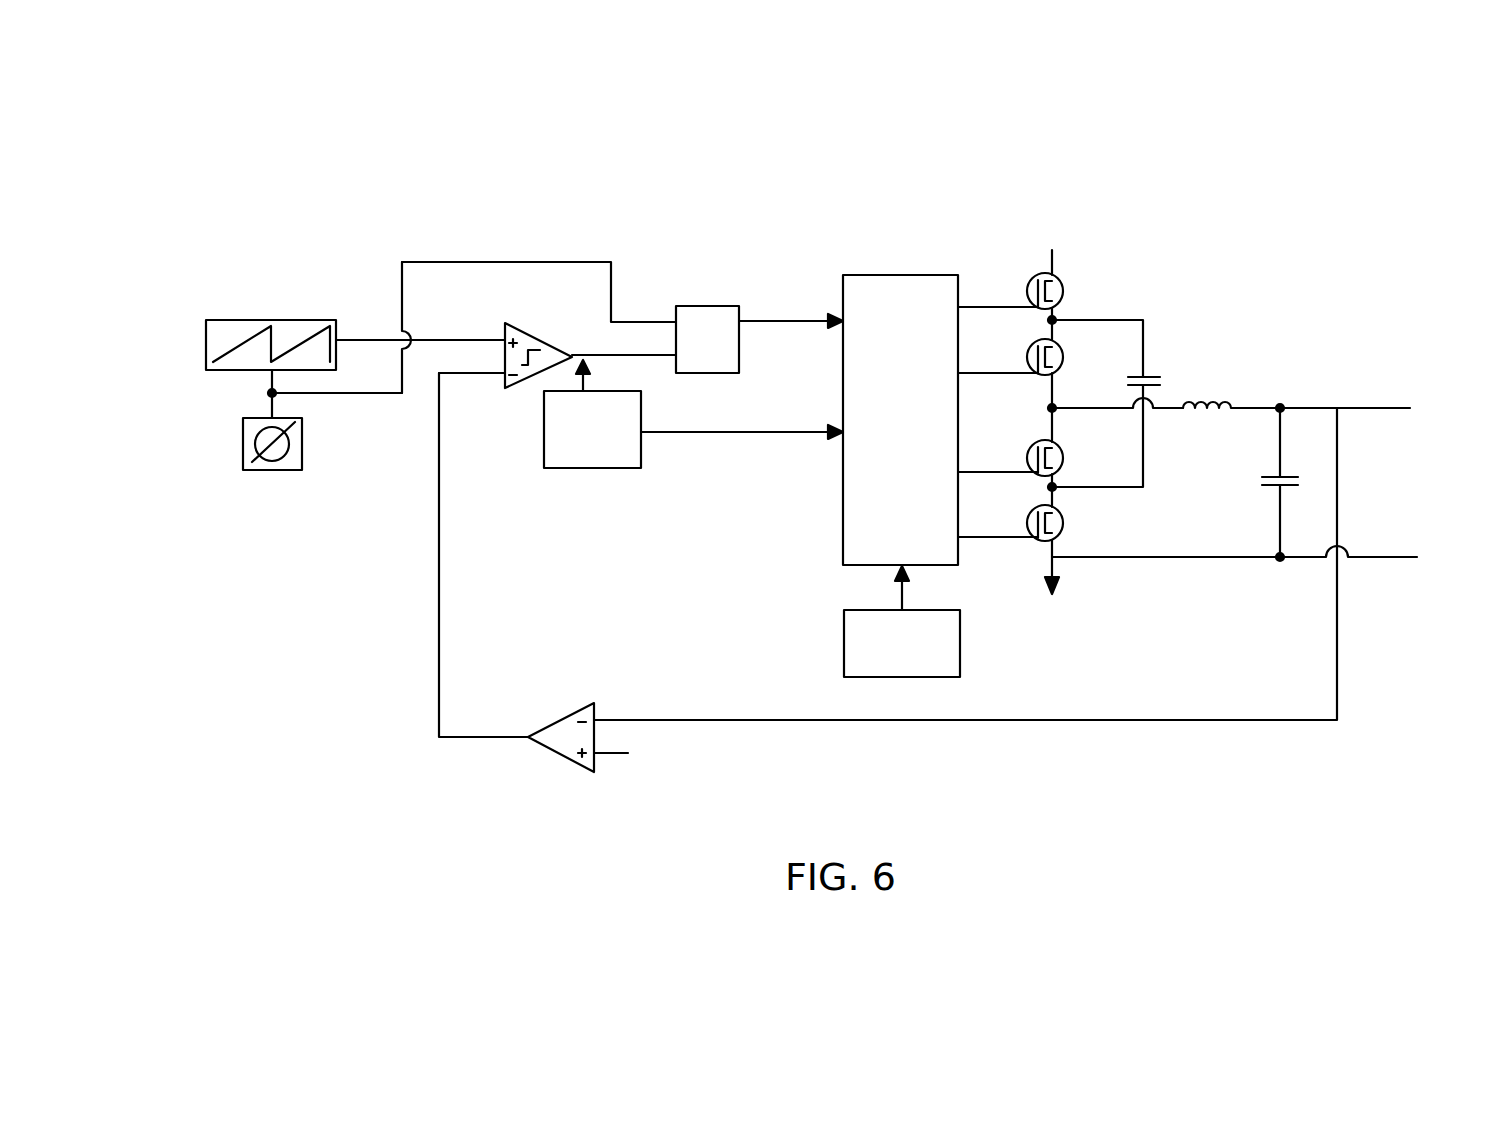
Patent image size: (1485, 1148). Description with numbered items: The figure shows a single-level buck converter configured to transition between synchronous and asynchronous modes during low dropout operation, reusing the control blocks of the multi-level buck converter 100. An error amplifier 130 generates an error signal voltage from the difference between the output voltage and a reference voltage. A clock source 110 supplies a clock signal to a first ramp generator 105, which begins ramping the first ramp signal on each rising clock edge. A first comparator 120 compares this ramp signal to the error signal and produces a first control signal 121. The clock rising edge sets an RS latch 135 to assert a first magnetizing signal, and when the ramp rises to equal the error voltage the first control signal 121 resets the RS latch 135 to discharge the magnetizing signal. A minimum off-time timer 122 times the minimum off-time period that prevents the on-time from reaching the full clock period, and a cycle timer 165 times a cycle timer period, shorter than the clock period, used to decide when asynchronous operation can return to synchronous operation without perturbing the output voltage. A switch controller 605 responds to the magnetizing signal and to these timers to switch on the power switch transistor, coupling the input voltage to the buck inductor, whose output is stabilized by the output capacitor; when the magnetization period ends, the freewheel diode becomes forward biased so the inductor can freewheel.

The multi-level buck converter 100 is at (722, 166).
The first ramp generator 105 is at (206, 348).
The clock source 110 is at (243, 444).
The first comparator 120 is at (538, 333).
The first control signal 121 is at (632, 352).
The minimum off-time timer 122 is at (544, 433).
The error amplifier 130 is at (555, 755).
The RS latch 135 is at (707, 306).
The cycle timer 165 is at (844, 643).
The switch controller 605 is at (843, 400).